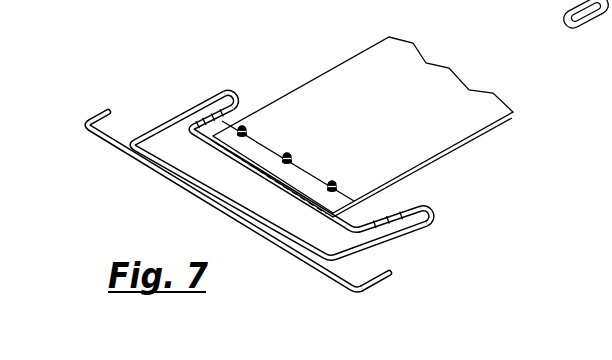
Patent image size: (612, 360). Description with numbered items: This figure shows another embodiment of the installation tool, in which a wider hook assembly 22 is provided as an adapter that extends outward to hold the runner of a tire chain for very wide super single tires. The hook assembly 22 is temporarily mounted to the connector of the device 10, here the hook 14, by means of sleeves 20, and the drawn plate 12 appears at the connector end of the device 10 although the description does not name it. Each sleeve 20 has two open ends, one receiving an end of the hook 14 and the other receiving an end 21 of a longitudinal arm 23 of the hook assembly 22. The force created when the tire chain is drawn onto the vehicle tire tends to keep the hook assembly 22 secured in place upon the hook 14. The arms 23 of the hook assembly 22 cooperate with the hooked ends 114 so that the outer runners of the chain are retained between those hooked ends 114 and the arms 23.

The device 10 is at (294, 164).
The plate 12 is at (481, 103).
The hook 14 is at (272, 180).
The sleeve 20 is at (217, 100).
The end of longitudinal arm 21 is at (227, 90).
The hook assembly 22 is at (158, 173).
The longitudinal arm 23 is at (163, 117).
The hooked end 114 is at (101, 114).